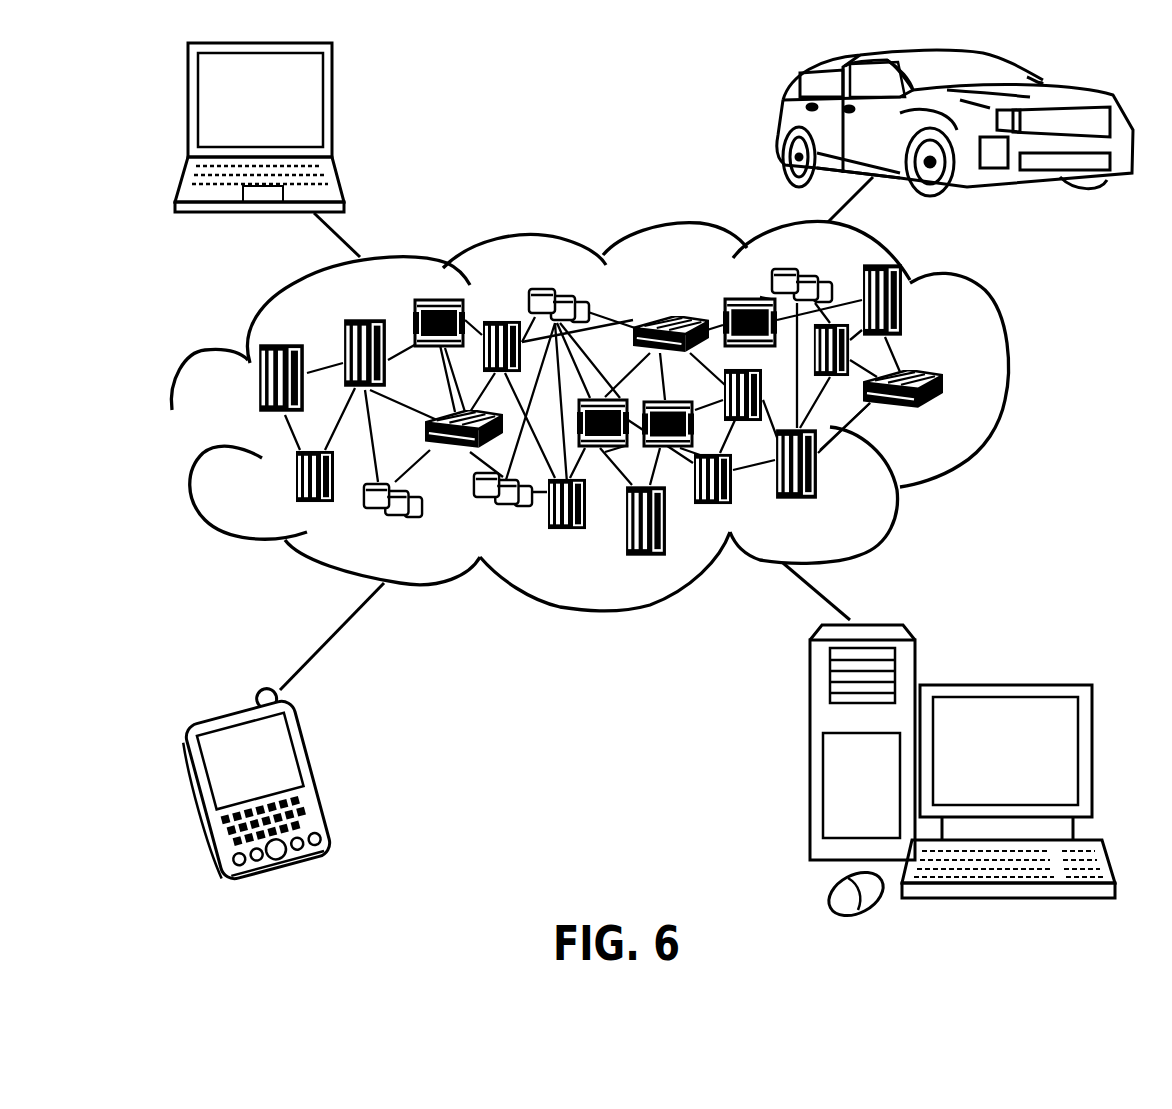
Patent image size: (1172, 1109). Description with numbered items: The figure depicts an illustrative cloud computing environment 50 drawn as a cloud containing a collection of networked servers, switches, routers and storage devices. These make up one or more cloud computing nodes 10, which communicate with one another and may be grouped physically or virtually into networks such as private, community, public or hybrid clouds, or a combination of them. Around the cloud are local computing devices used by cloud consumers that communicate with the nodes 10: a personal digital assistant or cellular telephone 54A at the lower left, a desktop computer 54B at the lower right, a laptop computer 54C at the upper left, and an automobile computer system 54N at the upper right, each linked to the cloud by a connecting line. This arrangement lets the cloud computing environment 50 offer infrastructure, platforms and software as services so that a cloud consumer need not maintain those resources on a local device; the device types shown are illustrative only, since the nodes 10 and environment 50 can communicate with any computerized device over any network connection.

The cloud computing nodes 10 is at (652, 409).
The cloud computing environment 50 is at (1005, 385).
The personal digital assistant or cellular telephone 54A is at (322, 781).
The desktop computer 54B is at (1005, 685).
The laptop computer 54C is at (332, 107).
The automobile computer system 54N is at (780, 122).